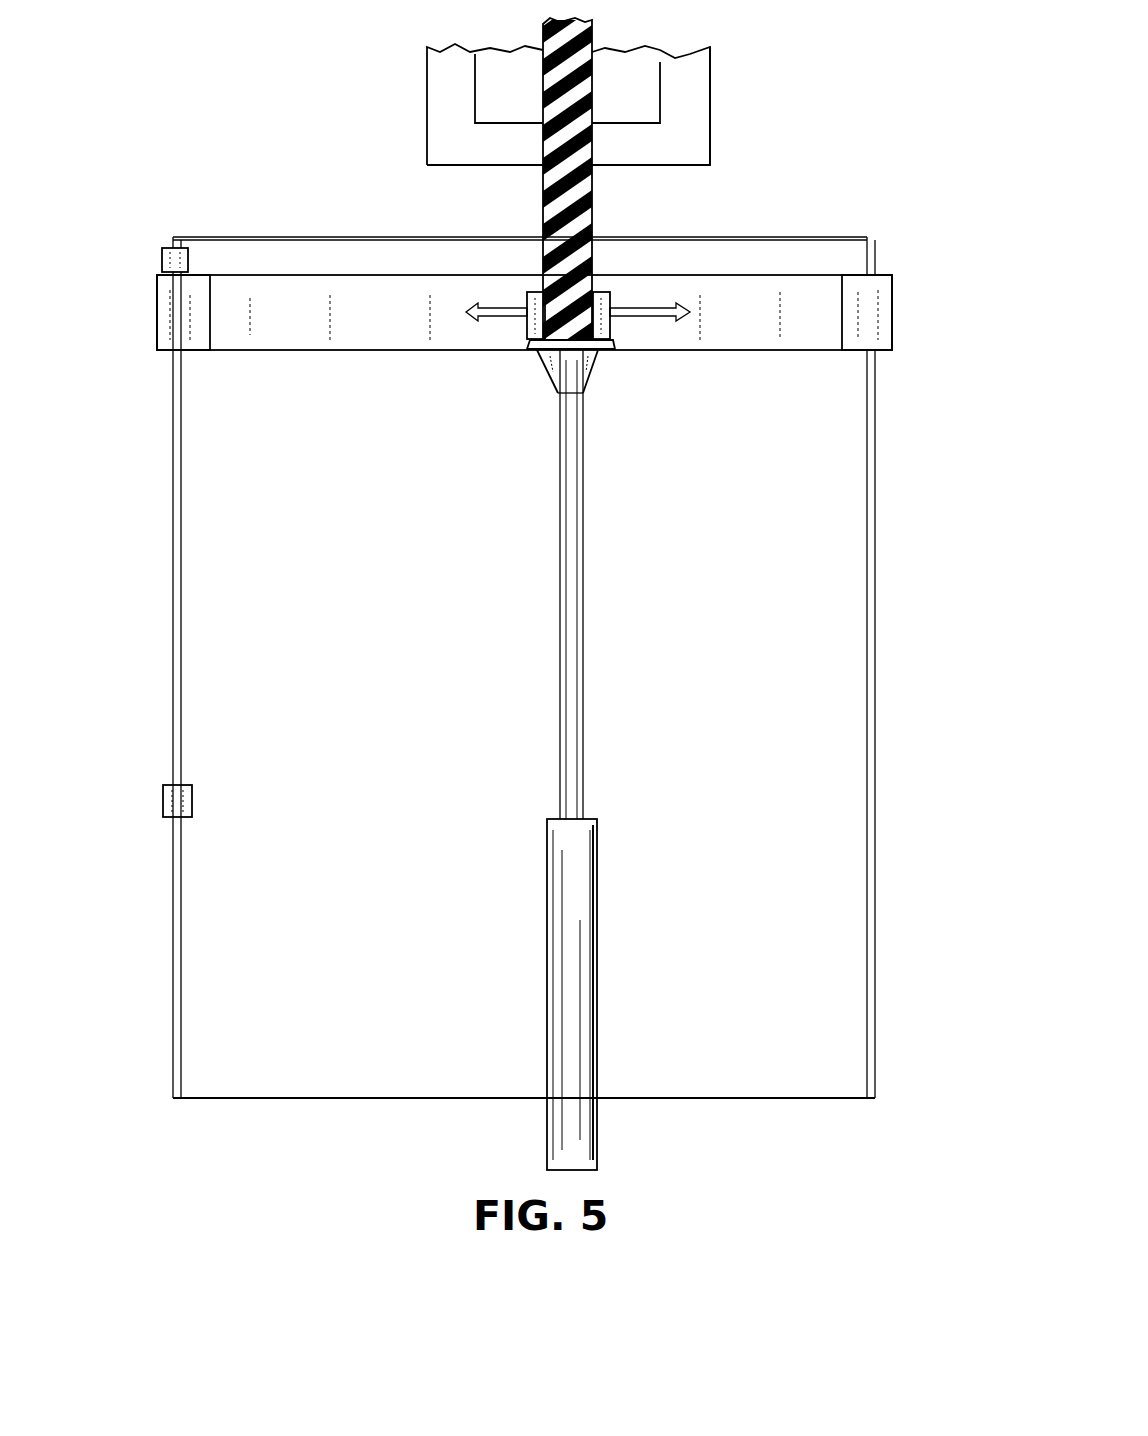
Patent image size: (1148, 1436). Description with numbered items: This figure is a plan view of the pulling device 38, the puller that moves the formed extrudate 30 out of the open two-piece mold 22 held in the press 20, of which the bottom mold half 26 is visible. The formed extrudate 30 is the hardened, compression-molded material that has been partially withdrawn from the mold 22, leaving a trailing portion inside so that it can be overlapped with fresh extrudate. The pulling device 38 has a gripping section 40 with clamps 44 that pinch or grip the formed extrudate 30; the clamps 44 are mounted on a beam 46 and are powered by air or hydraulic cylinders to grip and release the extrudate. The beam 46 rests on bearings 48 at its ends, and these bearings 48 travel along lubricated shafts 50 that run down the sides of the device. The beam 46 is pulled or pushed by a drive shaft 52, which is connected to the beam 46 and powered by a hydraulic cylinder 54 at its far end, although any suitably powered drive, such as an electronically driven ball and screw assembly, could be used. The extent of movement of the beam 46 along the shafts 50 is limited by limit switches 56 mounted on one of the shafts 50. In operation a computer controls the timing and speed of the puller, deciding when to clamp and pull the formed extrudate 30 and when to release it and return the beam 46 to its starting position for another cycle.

The press 20 is at (730, 122).
The two-piece mold 22 is at (676, 92).
The bottom mold half 26 is at (493, 99).
The formed extrudate 30 is at (597, 200).
The pulling device 38 is at (147, 509).
The gripping section 40 is at (496, 345).
The clamps 44 is at (533, 342).
The beam 46 is at (300, 350).
The bearings 48 is at (157, 305).
The lubricated shafts 50 is at (173, 676).
The drive shaft 52 is at (583, 583).
The hydraulic cylinder 54 is at (597, 882).
The limit switches 56 is at (163, 256).